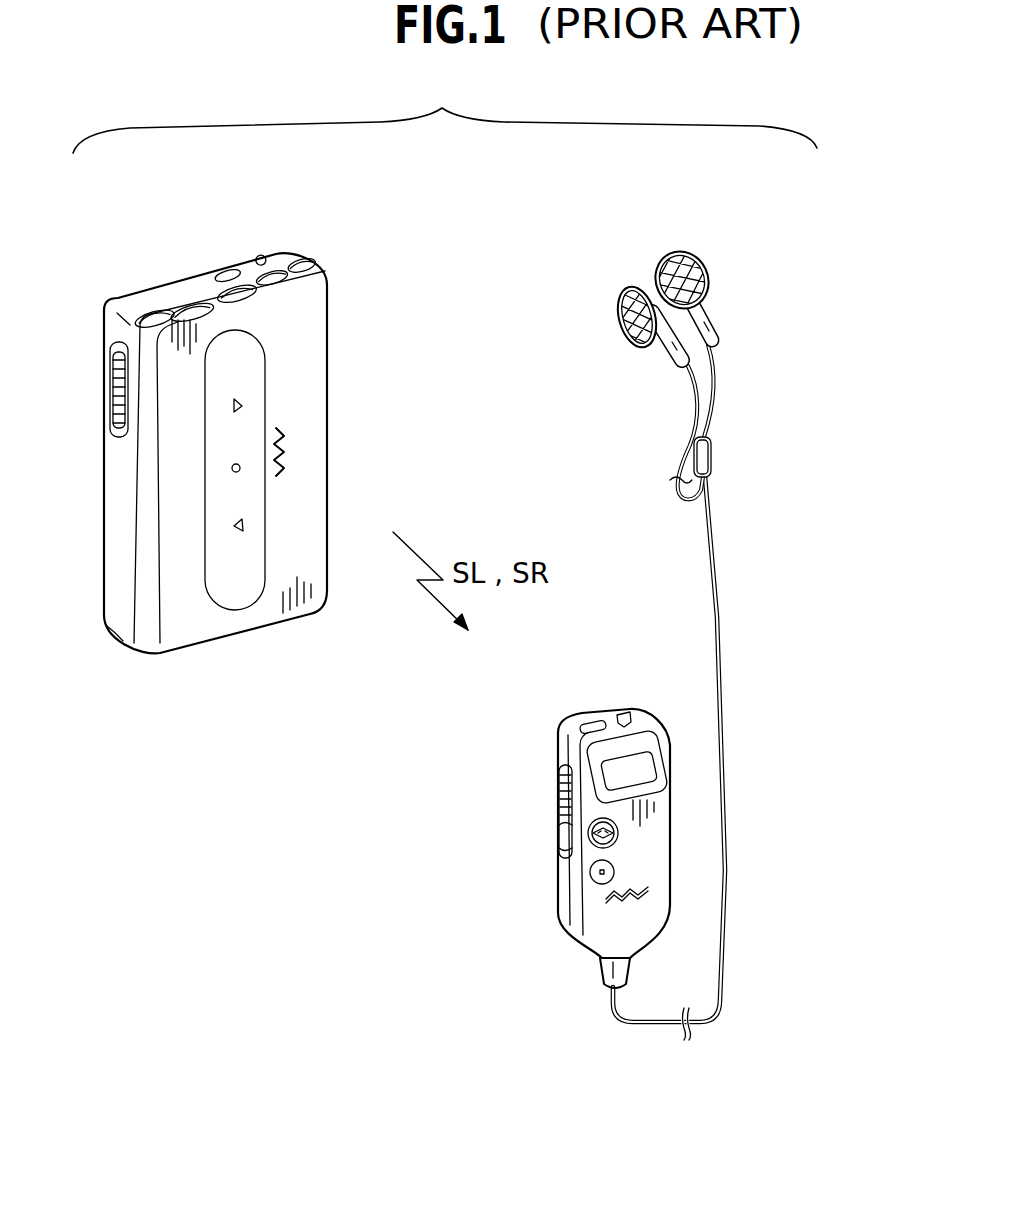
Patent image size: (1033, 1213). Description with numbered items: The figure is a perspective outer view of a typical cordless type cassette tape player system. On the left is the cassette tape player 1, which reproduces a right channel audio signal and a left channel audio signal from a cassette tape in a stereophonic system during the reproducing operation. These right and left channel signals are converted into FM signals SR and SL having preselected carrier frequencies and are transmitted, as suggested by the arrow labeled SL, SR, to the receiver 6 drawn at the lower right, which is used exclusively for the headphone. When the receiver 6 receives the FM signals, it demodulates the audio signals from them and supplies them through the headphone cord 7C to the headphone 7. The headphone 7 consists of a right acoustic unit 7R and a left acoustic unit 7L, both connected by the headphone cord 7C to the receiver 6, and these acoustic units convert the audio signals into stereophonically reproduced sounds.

The cassette tape player 1 is at (262, 682).
The receiver 6 is at (550, 981).
The headphone 7 is at (680, 615).
The left acoustic unit 7L is at (680, 253).
The right acoustic unit 7R is at (633, 290).
The headphone cord 7C is at (720, 610).